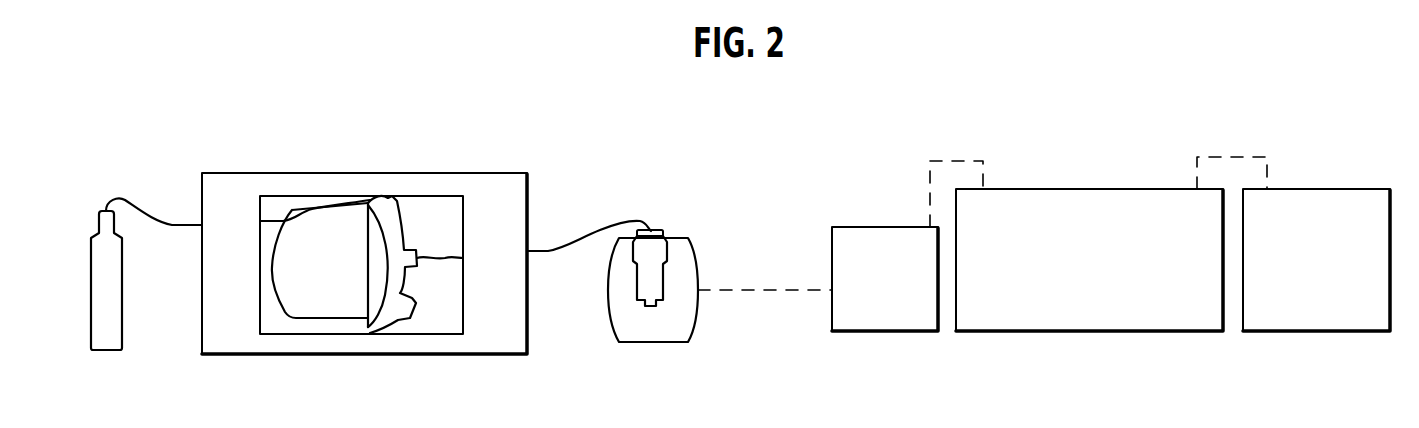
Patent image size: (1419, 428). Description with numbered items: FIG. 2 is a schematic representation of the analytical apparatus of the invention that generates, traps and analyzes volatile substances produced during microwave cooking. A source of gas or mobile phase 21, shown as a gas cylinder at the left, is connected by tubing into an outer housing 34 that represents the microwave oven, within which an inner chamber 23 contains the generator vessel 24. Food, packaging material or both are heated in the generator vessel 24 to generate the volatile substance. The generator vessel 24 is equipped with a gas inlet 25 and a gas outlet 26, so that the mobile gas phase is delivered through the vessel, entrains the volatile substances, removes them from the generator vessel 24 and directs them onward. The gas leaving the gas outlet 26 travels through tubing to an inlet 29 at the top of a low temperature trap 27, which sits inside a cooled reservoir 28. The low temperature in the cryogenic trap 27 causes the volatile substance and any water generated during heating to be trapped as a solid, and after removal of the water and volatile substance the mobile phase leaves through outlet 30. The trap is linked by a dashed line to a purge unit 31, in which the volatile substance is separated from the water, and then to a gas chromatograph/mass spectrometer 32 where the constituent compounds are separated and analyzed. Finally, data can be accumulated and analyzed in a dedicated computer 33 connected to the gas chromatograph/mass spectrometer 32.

The source of gas or mobile phase 21 is at (120, 318).
The chamber 23 is at (451, 232).
The generator vessel 24 is at (345, 282).
The gas inlet 25 is at (393, 198).
The gas outlet 26 is at (438, 262).
The low temperature trap 27 is at (656, 265).
The cooled reservoir 28 is at (656, 333).
The inlet 29 is at (643, 218).
The outlet 30 is at (660, 228).
The purge unit 31 is at (856, 227).
The gas chromatograph/mass spectrometer 32 is at (1077, 189).
The dedicated computer 33 is at (1332, 188).
The housing 34 is at (467, 173).